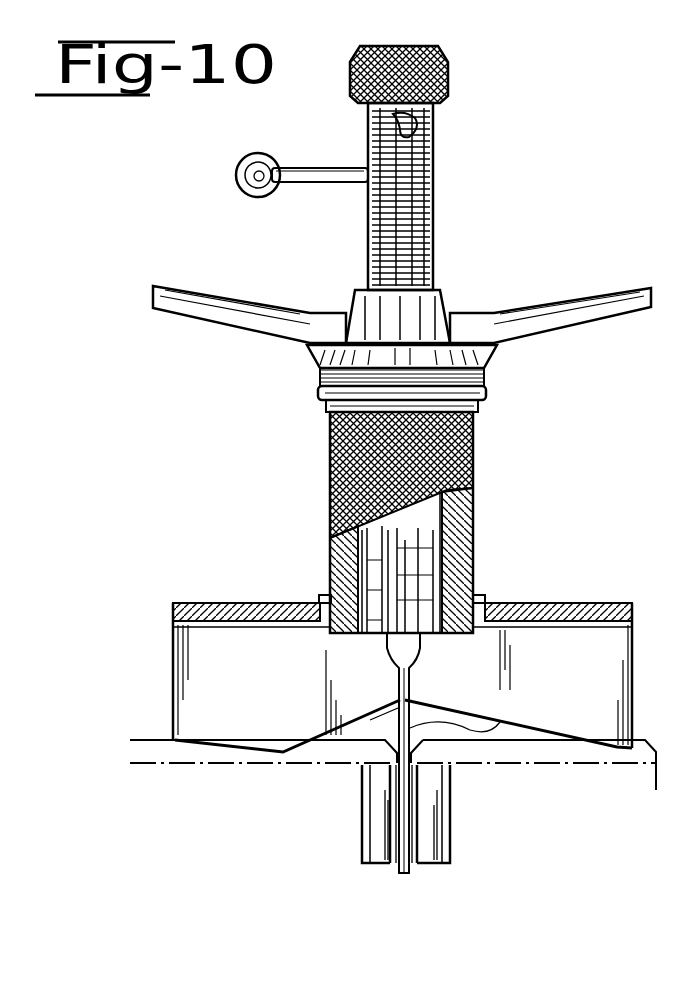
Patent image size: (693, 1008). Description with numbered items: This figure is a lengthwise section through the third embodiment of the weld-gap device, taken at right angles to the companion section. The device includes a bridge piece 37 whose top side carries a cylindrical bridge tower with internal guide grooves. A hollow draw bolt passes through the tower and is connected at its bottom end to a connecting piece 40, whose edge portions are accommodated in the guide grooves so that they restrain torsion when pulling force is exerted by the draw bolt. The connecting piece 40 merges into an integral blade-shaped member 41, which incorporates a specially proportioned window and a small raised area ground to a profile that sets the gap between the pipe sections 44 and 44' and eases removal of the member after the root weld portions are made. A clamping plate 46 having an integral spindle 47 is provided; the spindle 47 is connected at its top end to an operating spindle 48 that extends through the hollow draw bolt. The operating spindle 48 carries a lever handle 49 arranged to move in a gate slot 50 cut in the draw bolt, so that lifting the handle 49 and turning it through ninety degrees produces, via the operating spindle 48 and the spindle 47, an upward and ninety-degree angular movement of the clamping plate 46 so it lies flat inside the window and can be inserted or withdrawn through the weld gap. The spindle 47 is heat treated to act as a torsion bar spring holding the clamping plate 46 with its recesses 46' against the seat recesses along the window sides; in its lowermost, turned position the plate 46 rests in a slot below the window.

The bridge piece 37 is at (583, 610).
The connecting piece 40 is at (474, 590).
The blade-shaped member 41 is at (405, 703).
The pipe section 44 is at (263, 770).
The pipe section 44' is at (533, 770).
The clamping plate 46 is at (376, 830).
The recesses 46' is at (393, 814).
The spindle 47 is at (487, 730).
The operating spindle 48 is at (433, 230).
The lever handle 49 is at (307, 173).
The gate slot 50 is at (368, 123).